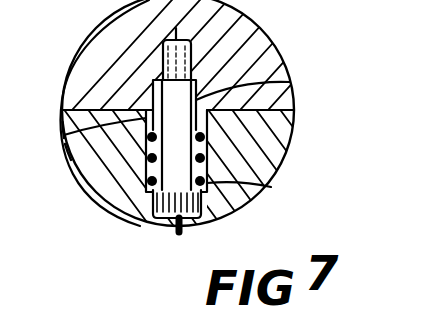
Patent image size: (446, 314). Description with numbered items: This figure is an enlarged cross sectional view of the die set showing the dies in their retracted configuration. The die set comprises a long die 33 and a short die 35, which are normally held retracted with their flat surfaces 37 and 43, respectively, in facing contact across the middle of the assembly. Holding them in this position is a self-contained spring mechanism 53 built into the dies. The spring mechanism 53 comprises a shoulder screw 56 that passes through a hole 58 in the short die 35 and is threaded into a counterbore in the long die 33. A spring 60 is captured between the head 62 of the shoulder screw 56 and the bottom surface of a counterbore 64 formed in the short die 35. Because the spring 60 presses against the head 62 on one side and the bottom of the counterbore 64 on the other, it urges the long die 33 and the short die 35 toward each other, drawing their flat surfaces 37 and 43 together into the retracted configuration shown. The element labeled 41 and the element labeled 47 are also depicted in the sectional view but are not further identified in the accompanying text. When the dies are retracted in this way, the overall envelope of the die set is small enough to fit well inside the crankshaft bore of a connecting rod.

The long die 33 is at (278, 49).
The short die 35 is at (96, 199).
The flat surface 37 is at (63, 136).
The upper housing body 41 is at (251, 17).
The flat surface 43 is at (64, 72).
The lower housing body 47 is at (294, 130).
The spring mechanism 53 is at (70, 160).
The shoulder screw 56 is at (180, 235).
The hole 58 is at (291, 83).
The spring 60 is at (271, 186).
The head 62 is at (190, 221).
The counterbore 64 is at (150, 222).